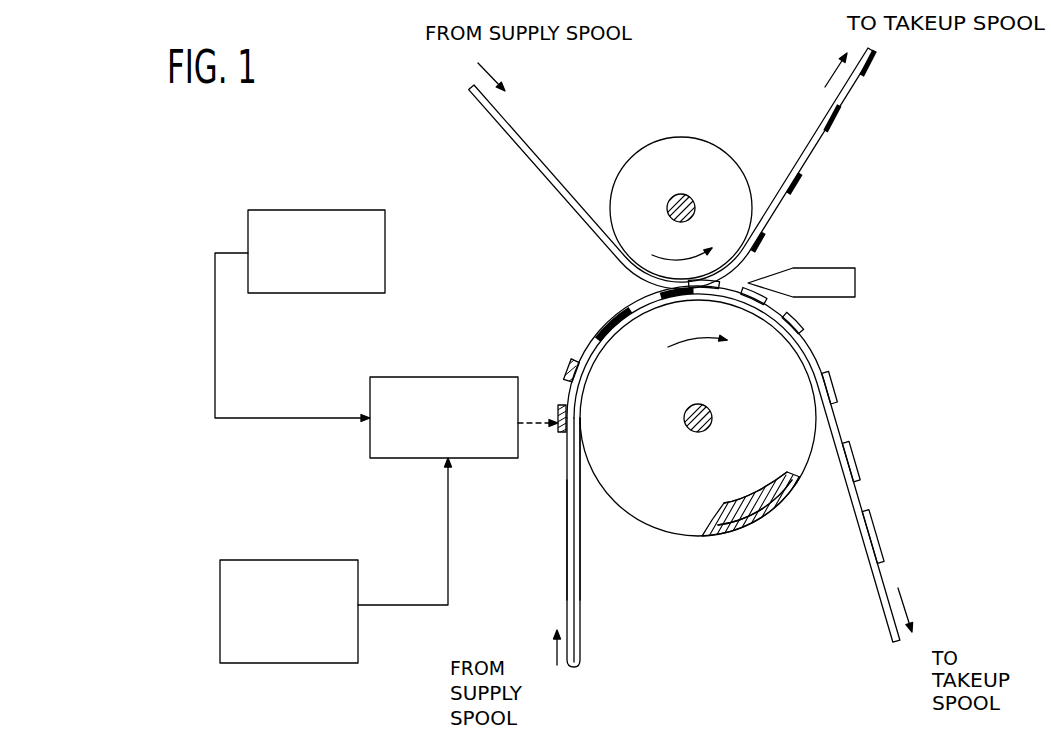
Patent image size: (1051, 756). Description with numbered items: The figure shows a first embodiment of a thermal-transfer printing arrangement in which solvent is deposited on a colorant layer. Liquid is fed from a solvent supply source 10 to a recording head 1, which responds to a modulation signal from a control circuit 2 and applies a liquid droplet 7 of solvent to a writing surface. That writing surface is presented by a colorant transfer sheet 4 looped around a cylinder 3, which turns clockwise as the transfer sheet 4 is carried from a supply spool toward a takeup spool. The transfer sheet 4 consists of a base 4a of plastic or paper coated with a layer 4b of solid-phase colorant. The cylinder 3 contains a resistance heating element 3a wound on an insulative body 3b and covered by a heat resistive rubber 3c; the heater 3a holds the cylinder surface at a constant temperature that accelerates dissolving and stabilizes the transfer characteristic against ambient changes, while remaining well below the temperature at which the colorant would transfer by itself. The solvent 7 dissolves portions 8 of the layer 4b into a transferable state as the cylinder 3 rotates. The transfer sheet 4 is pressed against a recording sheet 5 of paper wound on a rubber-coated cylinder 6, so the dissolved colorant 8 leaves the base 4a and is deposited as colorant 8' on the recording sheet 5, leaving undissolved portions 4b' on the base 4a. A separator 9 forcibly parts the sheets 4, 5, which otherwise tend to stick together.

The recording head 1 is at (450, 377).
The control circuit 2 is at (385, 272).
The cylinder 3 is at (657, 529).
The resistance heating element 3a is at (785, 478).
The insulative body 3b is at (718, 500).
The heat resistive rubber 3c is at (760, 510).
The colorant transfer sheet 4 is at (548, 588).
The base 4a is at (585, 603).
The layer of solid-phase colorant 4b is at (542, 540).
The undissolved portions 4b' is at (810, 421).
The recording sheet 5 is at (553, 177).
The rubber-coated cylinder 6 is at (712, 155).
The liquid droplet 7 is at (557, 433).
The dissolved colorant portions 8 is at (634, 311).
The deposited colorant 8' is at (816, 151).
The separator 9 is at (855, 282).
The solvent supply source 10 is at (268, 560).